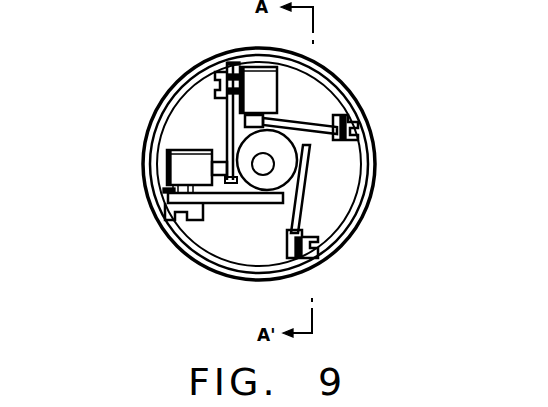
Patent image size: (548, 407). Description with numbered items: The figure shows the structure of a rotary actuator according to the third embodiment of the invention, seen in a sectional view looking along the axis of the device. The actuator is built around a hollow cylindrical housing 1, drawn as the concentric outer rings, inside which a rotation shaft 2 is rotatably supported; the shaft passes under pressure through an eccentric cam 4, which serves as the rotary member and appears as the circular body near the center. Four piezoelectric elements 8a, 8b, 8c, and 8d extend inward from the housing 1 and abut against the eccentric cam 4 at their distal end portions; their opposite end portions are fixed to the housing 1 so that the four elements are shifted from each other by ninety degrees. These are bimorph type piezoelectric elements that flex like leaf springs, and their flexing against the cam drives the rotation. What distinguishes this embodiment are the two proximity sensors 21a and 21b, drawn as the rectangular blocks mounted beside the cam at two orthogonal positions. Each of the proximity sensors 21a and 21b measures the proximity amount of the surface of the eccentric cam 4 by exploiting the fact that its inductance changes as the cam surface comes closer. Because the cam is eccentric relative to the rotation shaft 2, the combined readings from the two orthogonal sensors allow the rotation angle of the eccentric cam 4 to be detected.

The housing 1 is at (375, 137).
The rotation shaft 2 is at (255, 170).
The eccentric cam 4 is at (265, 186).
The piezoelectric element 8a is at (217, 203).
The piezoelectric element 8b is at (227, 127).
The piezoelectric element 8c is at (318, 135).
The piezoelectric element 8d is at (303, 200).
The proximity sensor 21a is at (273, 93).
The proximity sensor 21b is at (173, 163).